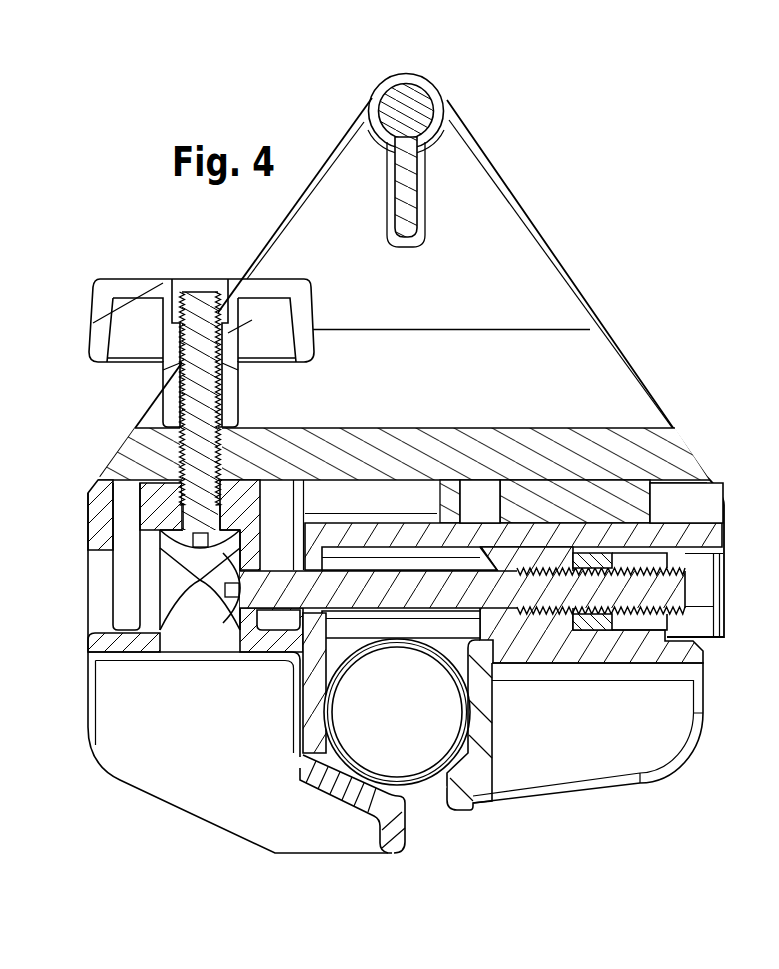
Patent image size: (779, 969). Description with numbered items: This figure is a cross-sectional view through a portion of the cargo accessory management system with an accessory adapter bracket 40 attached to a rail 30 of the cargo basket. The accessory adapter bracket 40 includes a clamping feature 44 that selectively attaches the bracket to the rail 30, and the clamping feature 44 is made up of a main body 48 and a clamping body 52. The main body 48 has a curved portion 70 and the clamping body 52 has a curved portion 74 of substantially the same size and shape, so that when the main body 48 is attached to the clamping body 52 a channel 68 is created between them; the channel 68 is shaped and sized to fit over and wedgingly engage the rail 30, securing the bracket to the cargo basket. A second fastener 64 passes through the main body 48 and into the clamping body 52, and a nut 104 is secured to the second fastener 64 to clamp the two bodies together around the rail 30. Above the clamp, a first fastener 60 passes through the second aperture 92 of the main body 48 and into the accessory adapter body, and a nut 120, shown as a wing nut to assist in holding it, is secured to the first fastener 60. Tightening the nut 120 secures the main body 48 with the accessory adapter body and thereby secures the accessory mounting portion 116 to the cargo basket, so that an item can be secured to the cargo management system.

The accessory adapter bracket 40 is at (72, 410).
The accessory mounting portion 116 is at (443, 102).
The nut 120 is at (138, 290).
The first fastener 60 is at (203, 392).
The second aperture 92 is at (187, 455).
The nut 104 is at (597, 562).
The second fastener 64 is at (672, 590).
The rail 30 is at (417, 787).
The main body 48 is at (130, 740).
The clamping body 52 is at (640, 741).
The curved portion 70 is at (300, 760).
The curved portion 74 is at (482, 740).
The channel 68 is at (447, 787).
The clamping feature 44 is at (408, 866).